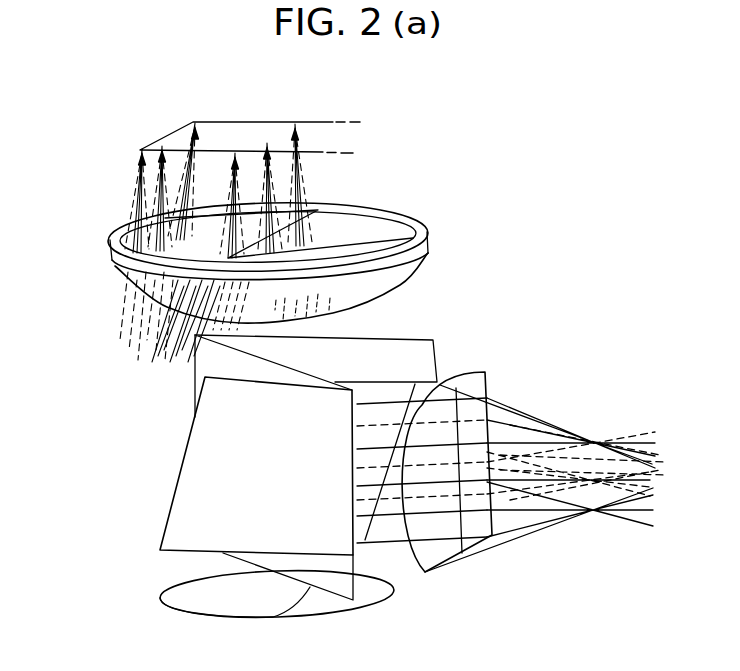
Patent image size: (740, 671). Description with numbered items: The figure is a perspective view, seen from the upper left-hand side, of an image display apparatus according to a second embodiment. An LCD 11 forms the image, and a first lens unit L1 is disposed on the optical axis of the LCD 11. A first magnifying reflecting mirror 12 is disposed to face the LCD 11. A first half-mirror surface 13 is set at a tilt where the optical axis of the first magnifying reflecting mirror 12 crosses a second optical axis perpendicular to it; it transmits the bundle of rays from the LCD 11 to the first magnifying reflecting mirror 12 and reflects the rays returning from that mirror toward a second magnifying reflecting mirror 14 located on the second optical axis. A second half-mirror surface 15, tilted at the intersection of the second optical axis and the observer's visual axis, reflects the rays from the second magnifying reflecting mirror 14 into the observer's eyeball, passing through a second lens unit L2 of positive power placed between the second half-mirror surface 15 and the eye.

The LCD 11 is at (218, 122).
The first magnifying reflecting mirror 12 is at (197, 617).
The first half-mirror surface 13 is at (168, 528).
The second magnifying reflecting mirror 14 is at (420, 338).
The second half-mirror surface 15 is at (193, 367).
The first lens unit L1 is at (110, 245).
The second lens unit L2 is at (485, 370).